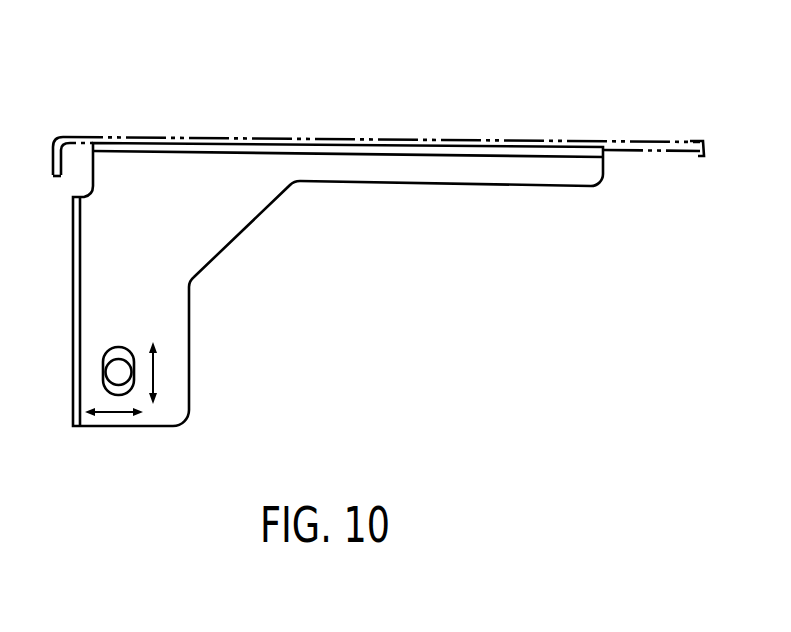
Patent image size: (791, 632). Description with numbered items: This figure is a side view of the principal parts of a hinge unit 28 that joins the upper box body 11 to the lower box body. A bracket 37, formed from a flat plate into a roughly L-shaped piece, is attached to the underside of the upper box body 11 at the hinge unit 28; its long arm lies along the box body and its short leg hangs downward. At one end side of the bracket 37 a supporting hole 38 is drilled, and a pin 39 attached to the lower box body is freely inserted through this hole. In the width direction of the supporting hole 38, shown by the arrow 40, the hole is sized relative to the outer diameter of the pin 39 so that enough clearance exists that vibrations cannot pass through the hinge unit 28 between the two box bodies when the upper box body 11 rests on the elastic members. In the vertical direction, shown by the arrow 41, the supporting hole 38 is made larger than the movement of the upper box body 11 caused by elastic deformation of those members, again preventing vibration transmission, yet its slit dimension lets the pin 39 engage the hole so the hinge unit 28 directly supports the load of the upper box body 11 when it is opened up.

The hinge unit 28 is at (179, 55).
The upper box body 11 is at (631, 140).
The bracket 37 is at (353, 181).
The supporting hole 38 is at (103, 332).
The pin 39 is at (112, 368).
The arrow 40 is at (113, 413).
The arrow 41 is at (153, 372).